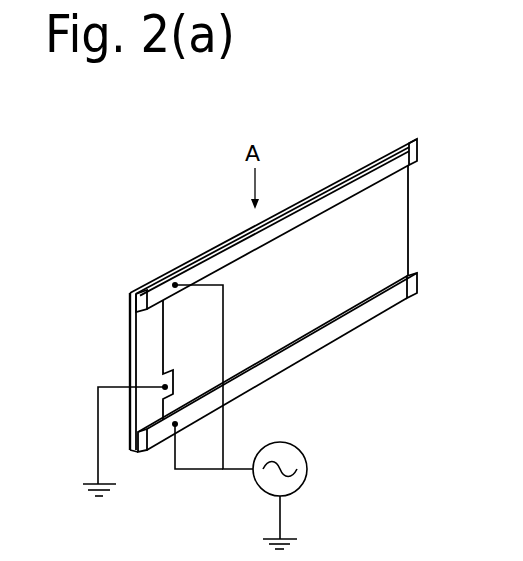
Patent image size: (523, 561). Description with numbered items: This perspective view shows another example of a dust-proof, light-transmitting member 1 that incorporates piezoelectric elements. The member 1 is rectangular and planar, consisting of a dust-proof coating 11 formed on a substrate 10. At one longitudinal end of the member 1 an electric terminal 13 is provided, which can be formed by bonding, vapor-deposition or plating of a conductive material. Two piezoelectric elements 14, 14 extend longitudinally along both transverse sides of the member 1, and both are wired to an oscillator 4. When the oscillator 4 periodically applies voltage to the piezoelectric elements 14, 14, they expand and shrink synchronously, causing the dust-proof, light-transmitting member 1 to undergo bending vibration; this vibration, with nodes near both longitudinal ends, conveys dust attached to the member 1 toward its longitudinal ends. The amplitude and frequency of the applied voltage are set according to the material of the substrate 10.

The dust-proof, light-transmitting member 1 is at (370, 120).
The substrate 10 is at (342, 224).
The dust-proof coating 11 is at (130, 323).
The electric terminal 13 is at (146, 334).
The piezoelectric elements 14 is at (410, 150).
The oscillator 4 is at (307, 469).